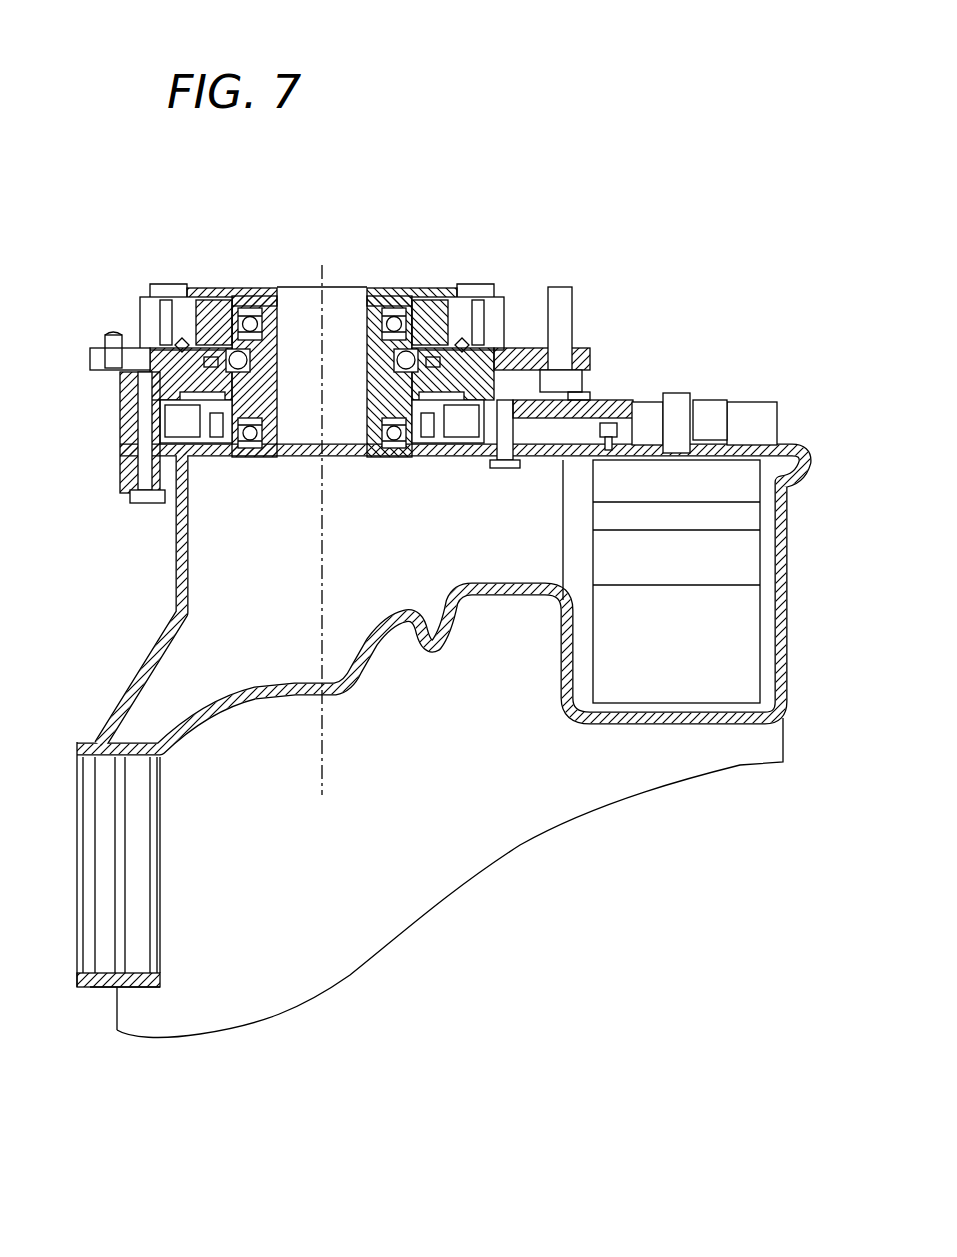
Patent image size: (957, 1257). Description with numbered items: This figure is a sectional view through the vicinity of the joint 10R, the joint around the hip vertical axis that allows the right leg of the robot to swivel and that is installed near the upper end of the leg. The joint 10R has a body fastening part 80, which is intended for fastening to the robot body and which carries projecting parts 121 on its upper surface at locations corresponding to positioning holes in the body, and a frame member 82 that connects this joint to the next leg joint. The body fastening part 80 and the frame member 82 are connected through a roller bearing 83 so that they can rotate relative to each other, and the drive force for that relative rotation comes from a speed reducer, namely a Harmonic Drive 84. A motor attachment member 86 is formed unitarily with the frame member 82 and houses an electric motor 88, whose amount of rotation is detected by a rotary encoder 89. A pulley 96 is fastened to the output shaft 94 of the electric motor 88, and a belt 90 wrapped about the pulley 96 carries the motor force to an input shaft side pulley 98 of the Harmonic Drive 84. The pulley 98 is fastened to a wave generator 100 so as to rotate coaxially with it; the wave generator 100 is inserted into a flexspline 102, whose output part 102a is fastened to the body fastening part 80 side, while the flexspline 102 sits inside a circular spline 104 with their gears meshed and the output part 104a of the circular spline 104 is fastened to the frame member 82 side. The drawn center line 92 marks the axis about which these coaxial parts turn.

The joint 10R is at (587, 330).
The body fastening part 80 is at (148, 333).
The frame member 82 is at (138, 680).
The roller bearing 83 is at (185, 300).
The Harmonic Drive 84 is at (360, 368).
The motor attachment member 86 is at (795, 440).
The electric motor 88 is at (742, 517).
The rotary encoder 89 is at (747, 663).
The belt 90 is at (180, 418).
The shaft axis 92 is at (325, 325).
The output shaft 94 is at (675, 398).
The pulley 96 is at (703, 400).
The input shaft side pulley 98 is at (227, 452).
The wave generator 100 is at (277, 360).
The flexspline 102 is at (250, 310).
The output part of the flexspline 102a is at (202, 335).
The circular spline 104 is at (182, 345).
The output part of the circular spline 104a is at (212, 365).
The projecting part 121 is at (105, 347).